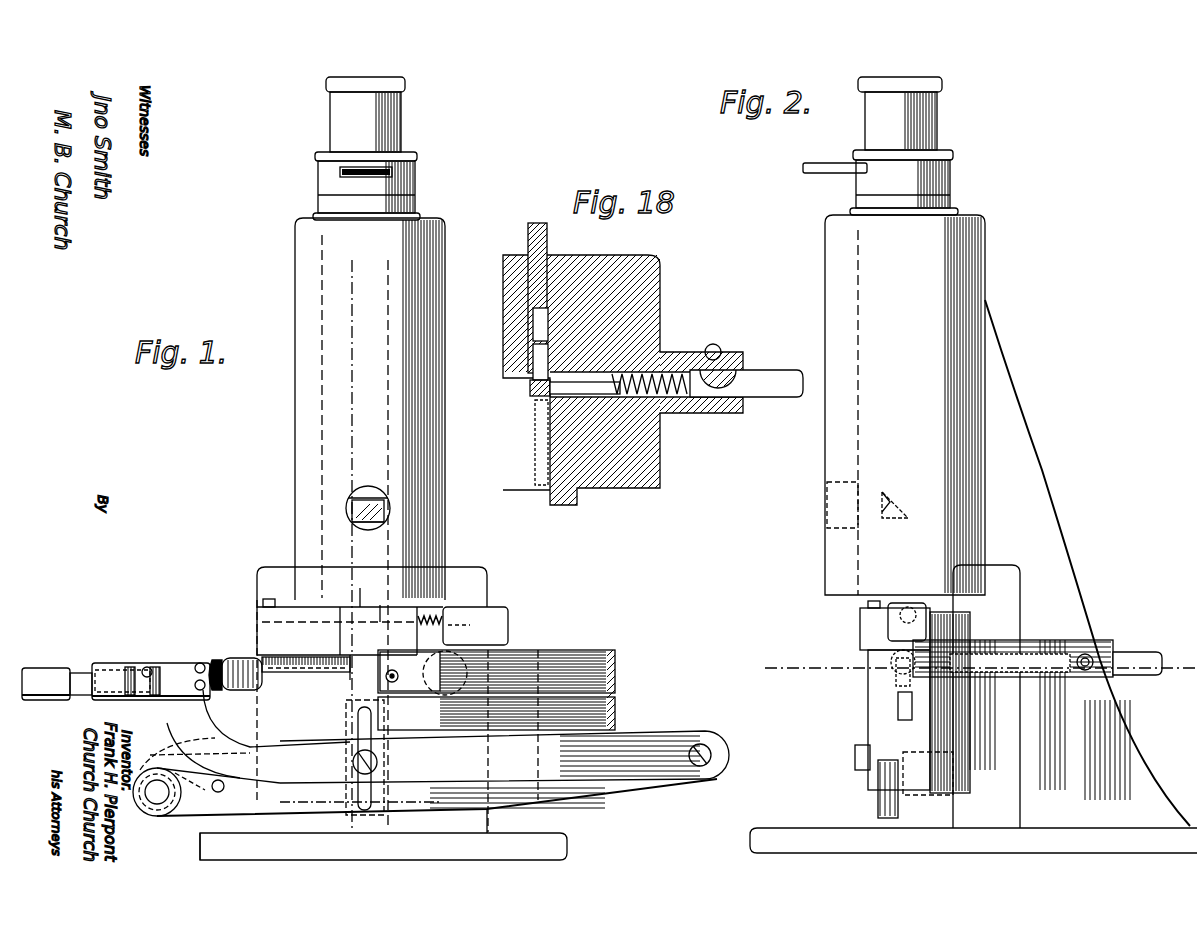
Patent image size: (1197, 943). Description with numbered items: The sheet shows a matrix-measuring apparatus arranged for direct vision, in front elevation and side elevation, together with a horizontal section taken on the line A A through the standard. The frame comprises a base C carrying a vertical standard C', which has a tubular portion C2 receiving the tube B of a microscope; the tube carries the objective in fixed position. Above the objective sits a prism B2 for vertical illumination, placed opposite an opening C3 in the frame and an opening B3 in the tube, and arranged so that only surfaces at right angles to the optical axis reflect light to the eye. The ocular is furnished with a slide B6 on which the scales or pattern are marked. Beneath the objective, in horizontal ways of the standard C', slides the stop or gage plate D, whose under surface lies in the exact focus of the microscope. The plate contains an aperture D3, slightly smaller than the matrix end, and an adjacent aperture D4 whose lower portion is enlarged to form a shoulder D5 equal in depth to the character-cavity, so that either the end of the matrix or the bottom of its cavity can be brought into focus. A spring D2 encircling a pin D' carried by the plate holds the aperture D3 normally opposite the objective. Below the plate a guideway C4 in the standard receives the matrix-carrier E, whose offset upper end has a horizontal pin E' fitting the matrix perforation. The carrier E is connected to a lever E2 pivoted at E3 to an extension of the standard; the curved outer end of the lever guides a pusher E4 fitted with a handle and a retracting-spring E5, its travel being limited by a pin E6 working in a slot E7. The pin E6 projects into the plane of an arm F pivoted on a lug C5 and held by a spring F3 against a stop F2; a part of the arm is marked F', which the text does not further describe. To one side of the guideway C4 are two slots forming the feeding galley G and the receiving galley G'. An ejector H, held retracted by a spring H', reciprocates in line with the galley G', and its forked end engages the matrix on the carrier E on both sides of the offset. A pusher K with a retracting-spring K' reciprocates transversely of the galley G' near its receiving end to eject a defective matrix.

In FIG. 1, the tube B is at (415, 290).
In FIG. 2, the tube B is at (947, 260).
In FIG. 1, the prism B2 is at (386, 510).
In FIG. 2, the prism B2 is at (900, 488).
In FIG. 1, the opening in tube B3 is at (390, 506).
In FIG. 1, the slide B6 is at (412, 168).
In FIG. 2, the slide B6 is at (822, 160).
In FIG. 1, the base C is at (407, 778).
In FIG. 2, the base C is at (973, 842).
In FIG. 1, the vertical standard C' is at (496, 741).
In FIG. 18, the vertical standard C' is at (623, 380).
In FIG. 2, the vertical standard C' is at (1071, 564).
In FIG. 1, the tubular portion C2 is at (440, 335).
In FIG. 2, the tubular portion C2 is at (983, 308).
In FIG. 1, the opening in frame C3 is at (392, 517).
In FIG. 2, the opening in frame C3 is at (833, 495).
In FIG. 1, the guideway C4 is at (347, 655).
In FIG. 1, the lug C5 is at (232, 815).
In FIG. 1, the stop or gage plate D is at (347, 683).
In FIG. 2, the stop or gage plate D is at (870, 625).
In FIG. 1, the pin D' is at (466, 612).
In FIG. 1, the spring D2 is at (430, 623).
In FIG. 1, the aperture D3 is at (380, 620).
In FIG. 1, the second aperture D4 is at (330, 632).
In FIG. 1, the shoulder D5 is at (352, 610).
In FIG. 1, the matrix-carrier E is at (344, 757).
In FIG. 18, the matrix-carrier E is at (505, 373).
In FIG. 18, the horizontal pin E' is at (505, 342).
In FIG. 2, the horizontal pin E' is at (888, 755).
In FIG. 1, the lever E2 is at (504, 769).
In FIG. 2, the lever E2 is at (900, 667).
In FIG. 1, the pivot E3 is at (712, 740).
In FIG. 1, the pusher E4 is at (78, 697).
In FIG. 1, the retracting-spring E5 is at (128, 697).
In FIG. 1, the pin E6 is at (172, 678).
In FIG. 1, the slot E7 is at (212, 690).
In FIG. 1, the arm F is at (414, 757).
In FIG. 1, the pivot F' is at (163, 808).
In FIG. 1, the stop F2 is at (190, 787).
In FIG. 1, the spring F3 is at (215, 776).
In FIG. 2, the feeding galley G is at (898, 702).
In FIG. 18, the receiving galley G' is at (501, 442).
In FIG. 2, the receiving galley G' is at (869, 720).
In FIG. 1, the ejector H is at (234, 659).
In FIG. 18, the ejector H is at (554, 298).
In FIG. 2, the ejector H is at (928, 638).
In FIG. 1, the spring H' is at (306, 690).
In FIG. 1, the pusher K is at (412, 694).
In FIG. 18, the pusher K is at (543, 413).
In FIG. 2, the pusher K is at (1037, 649).
In FIG. 18, the retracting-spring K' is at (707, 360).
In FIG. 2, the retracting-spring K' is at (1068, 634).
In FIG. 18, the section line A is at (527, 393).
In FIG. 2, the section line A is at (969, 671).